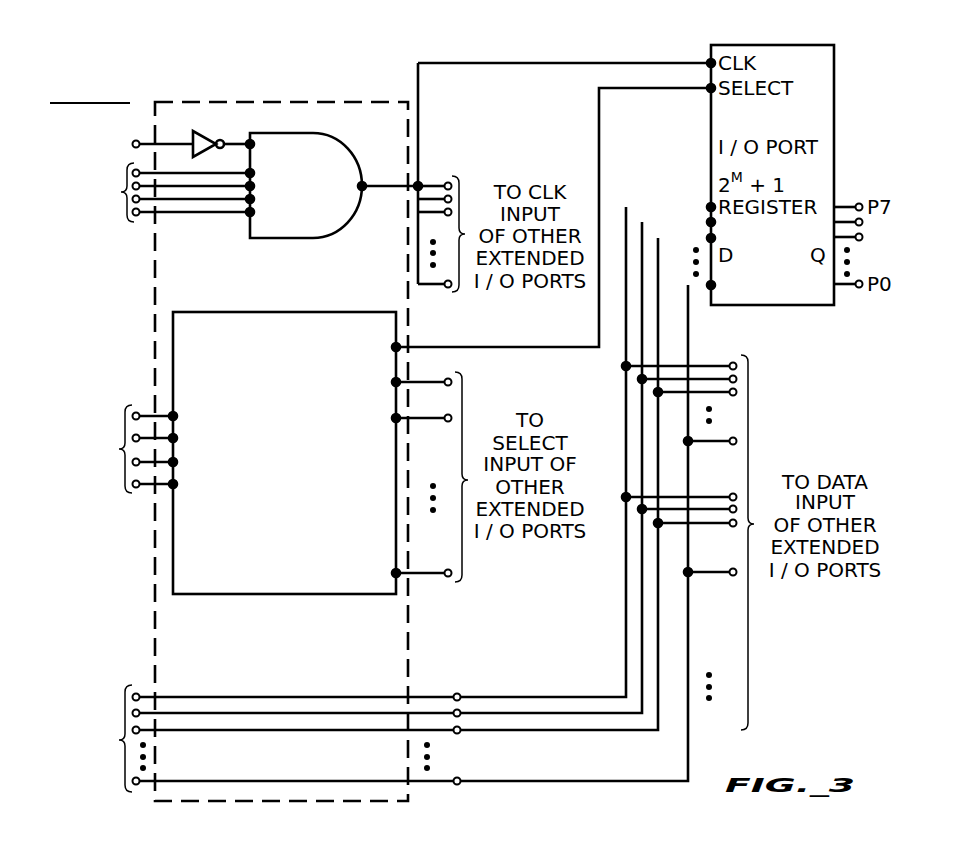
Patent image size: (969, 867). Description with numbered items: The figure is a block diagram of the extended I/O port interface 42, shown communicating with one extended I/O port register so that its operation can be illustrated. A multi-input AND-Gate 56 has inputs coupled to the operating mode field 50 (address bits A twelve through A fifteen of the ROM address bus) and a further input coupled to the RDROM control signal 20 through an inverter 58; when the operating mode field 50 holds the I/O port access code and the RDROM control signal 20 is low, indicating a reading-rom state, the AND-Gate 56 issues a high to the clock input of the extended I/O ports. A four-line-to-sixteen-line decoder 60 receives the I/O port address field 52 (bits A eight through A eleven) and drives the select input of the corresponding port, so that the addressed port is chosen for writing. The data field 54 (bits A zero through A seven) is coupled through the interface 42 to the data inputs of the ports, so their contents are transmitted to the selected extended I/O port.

The extended I/O port interface 42 is at (308, 102).
The RDROM control signal 20 is at (121, 129).
The inverter 58 is at (205, 131).
The operating mode field 50 is at (147, 201).
The multi-input AND-Gate 56 is at (345, 141).
The 4-line-to-16-line decoder 60 is at (280, 312).
The I/O port address field 52 is at (108, 453).
The data field 54 is at (364, 499).